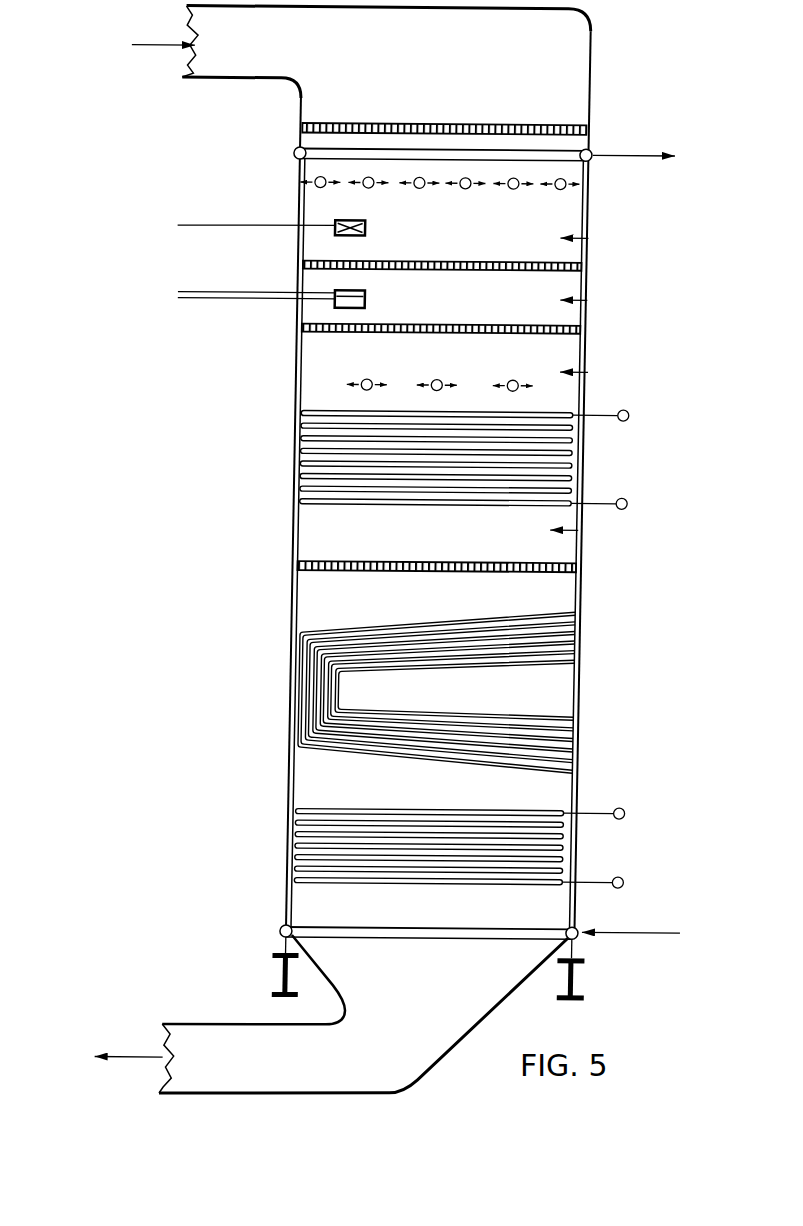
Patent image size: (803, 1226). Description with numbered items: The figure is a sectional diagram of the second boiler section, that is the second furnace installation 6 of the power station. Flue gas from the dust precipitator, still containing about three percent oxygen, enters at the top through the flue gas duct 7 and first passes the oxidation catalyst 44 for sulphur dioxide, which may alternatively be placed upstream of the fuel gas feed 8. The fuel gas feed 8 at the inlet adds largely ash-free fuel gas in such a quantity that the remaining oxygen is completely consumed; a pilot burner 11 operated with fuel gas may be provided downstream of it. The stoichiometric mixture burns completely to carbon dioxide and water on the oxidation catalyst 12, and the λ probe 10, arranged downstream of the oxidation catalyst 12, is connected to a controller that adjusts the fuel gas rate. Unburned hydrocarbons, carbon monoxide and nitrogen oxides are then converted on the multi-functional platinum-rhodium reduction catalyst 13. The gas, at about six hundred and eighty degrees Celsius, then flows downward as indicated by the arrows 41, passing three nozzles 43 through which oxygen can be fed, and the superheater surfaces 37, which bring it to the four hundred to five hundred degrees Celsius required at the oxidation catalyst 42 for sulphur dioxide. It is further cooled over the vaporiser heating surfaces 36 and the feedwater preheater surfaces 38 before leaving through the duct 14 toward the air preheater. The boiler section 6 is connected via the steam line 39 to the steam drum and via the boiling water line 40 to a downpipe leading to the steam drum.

The second furnace installation 6 is at (298, 613).
The flue gas duct 7 is at (247, 56).
The fuel gas feed 8 is at (372, 178).
The λ probe 10 is at (343, 305).
The pilot burner 11 is at (337, 228).
The oxidation catalyst 12 is at (583, 264).
The reduction catalyst 13 is at (588, 328).
The outlet gas duct 14 is at (215, 1044).
The vaporiser heating surfaces 36 is at (568, 748).
The superheater surfaces 37 is at (558, 450).
The feedwater preheater surfaces 38 is at (559, 844).
The steam line 39 is at (620, 152).
The boiling water line 40 is at (664, 929).
The gas flow arrows 41 is at (590, 236).
The oxidation catalyst 42 is at (583, 566).
The nozzles 43 is at (366, 389).
The oxidation catalyst 44 is at (560, 126).